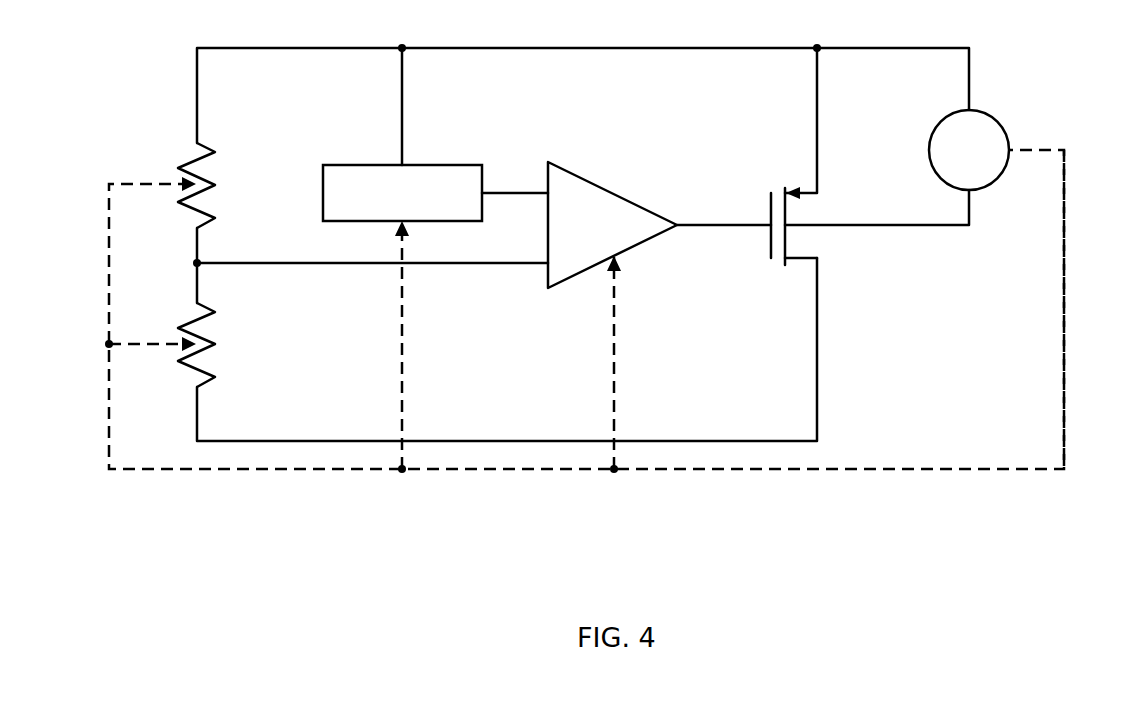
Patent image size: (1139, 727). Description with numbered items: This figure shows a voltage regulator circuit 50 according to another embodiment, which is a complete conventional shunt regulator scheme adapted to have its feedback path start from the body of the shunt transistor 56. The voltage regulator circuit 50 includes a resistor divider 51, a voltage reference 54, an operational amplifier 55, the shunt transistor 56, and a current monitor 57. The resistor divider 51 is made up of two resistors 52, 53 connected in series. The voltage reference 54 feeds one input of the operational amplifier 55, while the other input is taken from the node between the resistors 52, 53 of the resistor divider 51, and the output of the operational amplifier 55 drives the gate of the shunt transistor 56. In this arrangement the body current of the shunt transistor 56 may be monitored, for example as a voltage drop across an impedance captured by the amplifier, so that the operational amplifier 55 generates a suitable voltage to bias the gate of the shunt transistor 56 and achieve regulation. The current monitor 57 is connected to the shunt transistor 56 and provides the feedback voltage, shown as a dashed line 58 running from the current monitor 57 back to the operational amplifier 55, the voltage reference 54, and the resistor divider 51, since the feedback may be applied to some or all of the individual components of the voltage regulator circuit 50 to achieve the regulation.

The voltage regulator circuit 50 is at (484, 555).
The resistor divider 51 is at (149, 157).
The resistor 52 is at (215, 150).
The resistor 53 is at (216, 378).
The voltage reference 54 is at (378, 165).
The operational amplifier 55 is at (592, 182).
The shunt transistor 56 is at (770, 205).
The current monitor 57 is at (930, 138).
The feedback control path 58 is at (1066, 252).